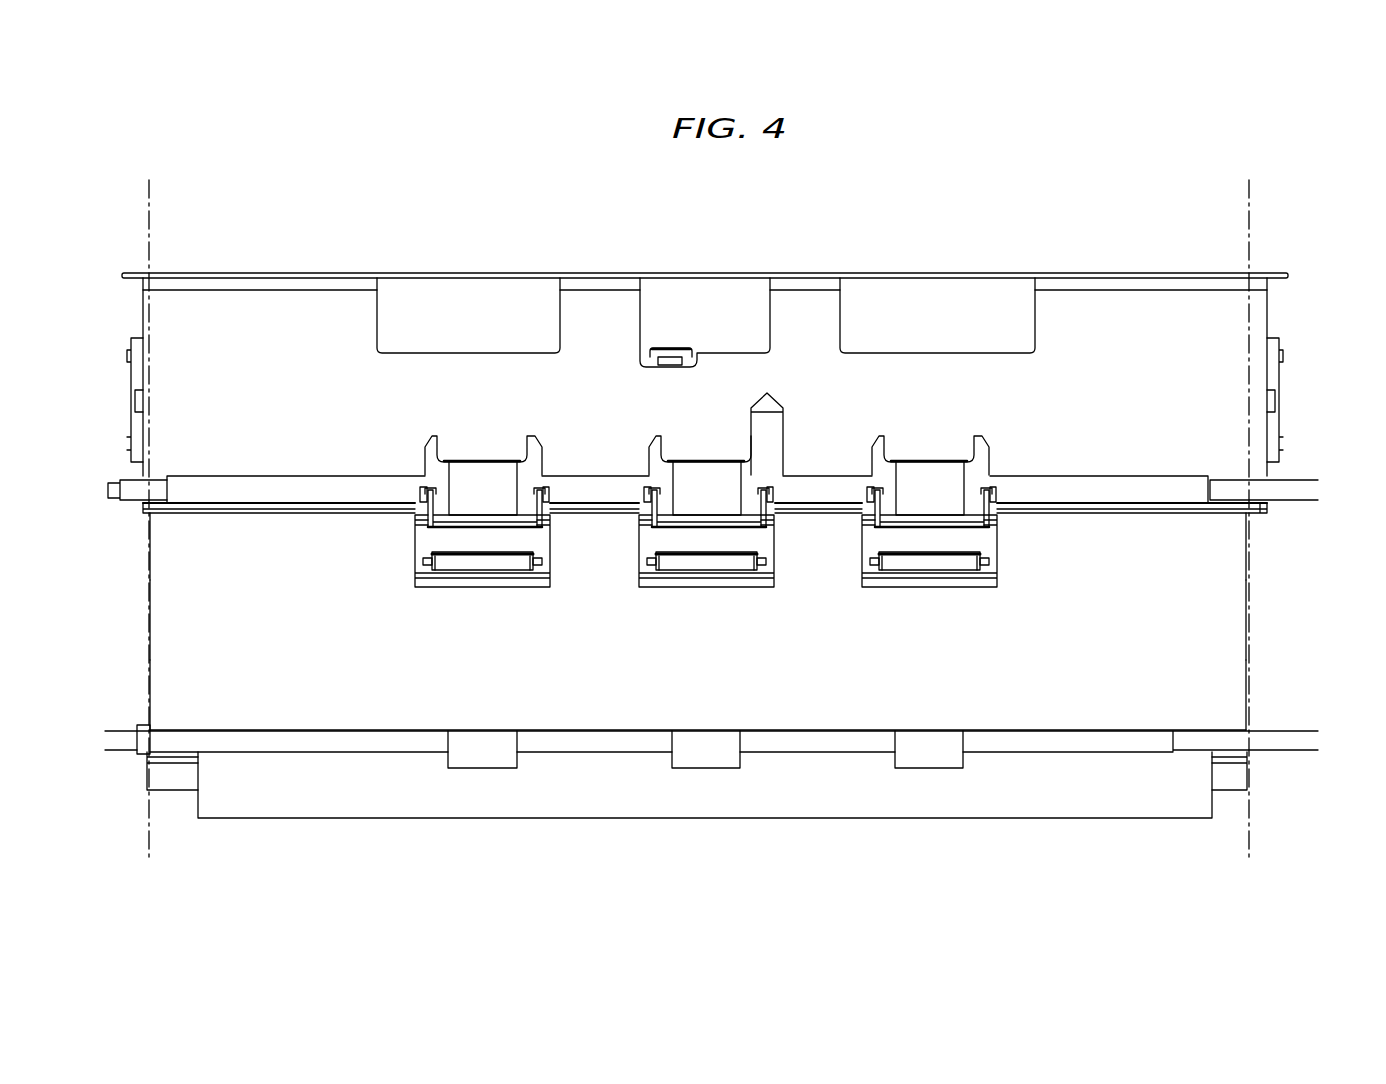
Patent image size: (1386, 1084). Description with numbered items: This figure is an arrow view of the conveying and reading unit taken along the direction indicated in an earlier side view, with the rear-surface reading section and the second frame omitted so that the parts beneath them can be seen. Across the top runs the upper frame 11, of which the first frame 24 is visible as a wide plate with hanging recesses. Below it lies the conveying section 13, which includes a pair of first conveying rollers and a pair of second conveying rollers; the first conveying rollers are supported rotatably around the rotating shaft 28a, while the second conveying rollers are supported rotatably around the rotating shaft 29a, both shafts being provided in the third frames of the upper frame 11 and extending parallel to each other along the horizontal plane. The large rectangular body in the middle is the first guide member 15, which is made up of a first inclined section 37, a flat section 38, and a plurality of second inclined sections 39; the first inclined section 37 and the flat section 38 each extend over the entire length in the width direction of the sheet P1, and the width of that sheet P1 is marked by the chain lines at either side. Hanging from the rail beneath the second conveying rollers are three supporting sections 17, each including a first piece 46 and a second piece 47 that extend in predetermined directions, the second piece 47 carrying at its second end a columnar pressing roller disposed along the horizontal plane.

The upper frame 11 is at (1169, 233).
The conveying section 13 is at (629, 834).
The first guide member 15 is at (757, 621).
The supporting section 17 is at (973, 560).
The first frame 24 is at (1129, 310).
The rotating shaft 28a is at (1281, 743).
The rotating shaft 29a is at (1293, 487).
The first inclined section 37 is at (726, 695).
The flat section 38 is at (1232, 618).
The second inclined sections 39 is at (1232, 548).
The first piece 46 is at (990, 518).
The second piece 47 is at (988, 545).
The sheet P1 is at (1250, 208).